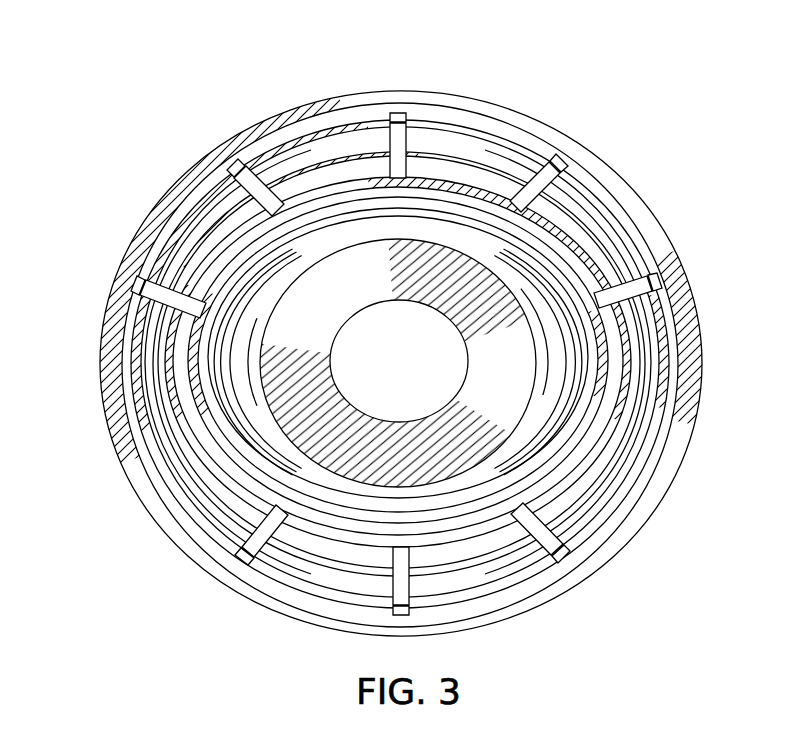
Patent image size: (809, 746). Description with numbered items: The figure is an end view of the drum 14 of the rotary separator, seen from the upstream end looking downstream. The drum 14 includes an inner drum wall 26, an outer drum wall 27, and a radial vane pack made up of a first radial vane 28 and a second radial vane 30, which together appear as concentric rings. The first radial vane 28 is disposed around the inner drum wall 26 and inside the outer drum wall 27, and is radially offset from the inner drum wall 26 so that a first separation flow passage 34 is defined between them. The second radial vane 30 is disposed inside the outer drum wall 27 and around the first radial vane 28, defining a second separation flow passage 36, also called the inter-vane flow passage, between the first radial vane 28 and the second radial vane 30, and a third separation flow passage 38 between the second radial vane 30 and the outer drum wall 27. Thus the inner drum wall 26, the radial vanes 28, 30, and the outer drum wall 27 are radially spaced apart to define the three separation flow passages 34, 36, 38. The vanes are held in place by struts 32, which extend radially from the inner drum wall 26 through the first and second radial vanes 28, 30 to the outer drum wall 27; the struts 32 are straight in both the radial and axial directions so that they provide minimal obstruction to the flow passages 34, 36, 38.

The drum 14 is at (562, 84).
The inner drum wall 26 is at (582, 452).
The outer drum wall 27 is at (656, 218).
The first radial vane 28 is at (637, 381).
The second radial vane 30 is at (672, 328).
The struts 32 is at (565, 160).
The first separation flow passage 34 is at (200, 244).
The second separation flow passage 36 is at (202, 198).
The third separation flow passage 38 is at (342, 115).